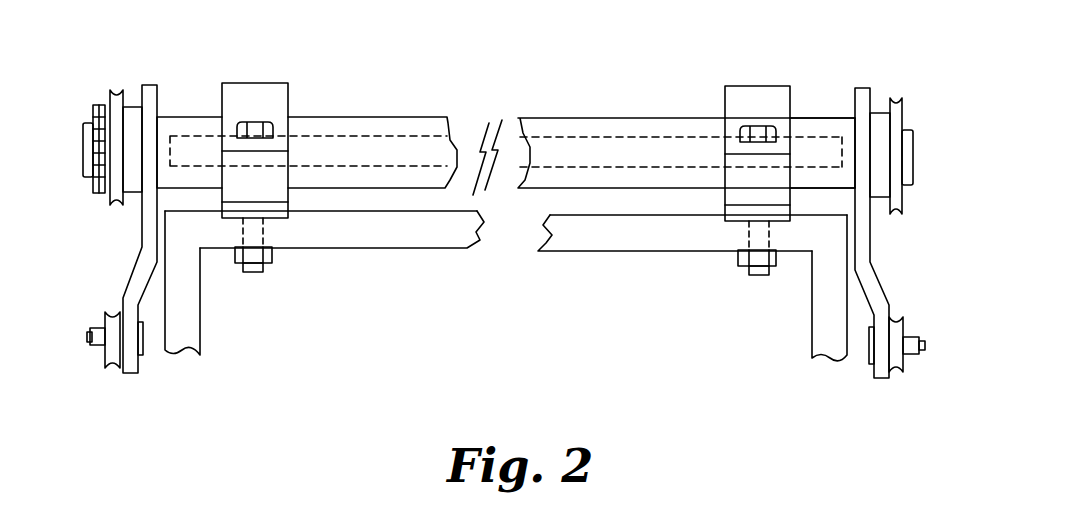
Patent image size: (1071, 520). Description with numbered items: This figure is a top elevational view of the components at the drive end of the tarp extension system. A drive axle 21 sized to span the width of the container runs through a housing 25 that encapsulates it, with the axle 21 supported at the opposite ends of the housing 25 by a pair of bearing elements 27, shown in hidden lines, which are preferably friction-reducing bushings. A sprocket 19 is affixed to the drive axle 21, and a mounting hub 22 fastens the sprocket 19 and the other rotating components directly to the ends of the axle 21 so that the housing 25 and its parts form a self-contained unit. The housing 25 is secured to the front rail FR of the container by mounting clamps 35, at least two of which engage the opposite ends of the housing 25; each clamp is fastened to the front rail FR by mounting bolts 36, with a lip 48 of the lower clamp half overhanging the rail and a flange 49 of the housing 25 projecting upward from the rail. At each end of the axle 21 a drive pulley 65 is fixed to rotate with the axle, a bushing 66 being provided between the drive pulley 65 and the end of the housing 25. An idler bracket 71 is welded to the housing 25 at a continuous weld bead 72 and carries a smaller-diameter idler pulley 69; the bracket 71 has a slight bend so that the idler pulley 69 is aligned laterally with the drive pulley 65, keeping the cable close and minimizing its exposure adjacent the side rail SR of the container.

The sprocket 19 is at (97, 105).
The drive axle 21 is at (463, 142).
The mounting hub 22 is at (83, 150).
The housing 25 is at (360, 120).
The bearing elements 27 is at (172, 133).
The mounting clamps 35 is at (258, 80).
The mounting bolts 36 is at (264, 263).
The lip 48 is at (288, 204).
The flange 49 is at (300, 214).
The drive pulleys 65 is at (116, 90).
The bushing 66 is at (133, 113).
The idler pulleys 69 is at (112, 365).
The idler bracket 71 is at (148, 232).
The continuous weld bead 72 is at (158, 112).
The side rail SR is at (195, 328).
The front rail FR is at (587, 238).